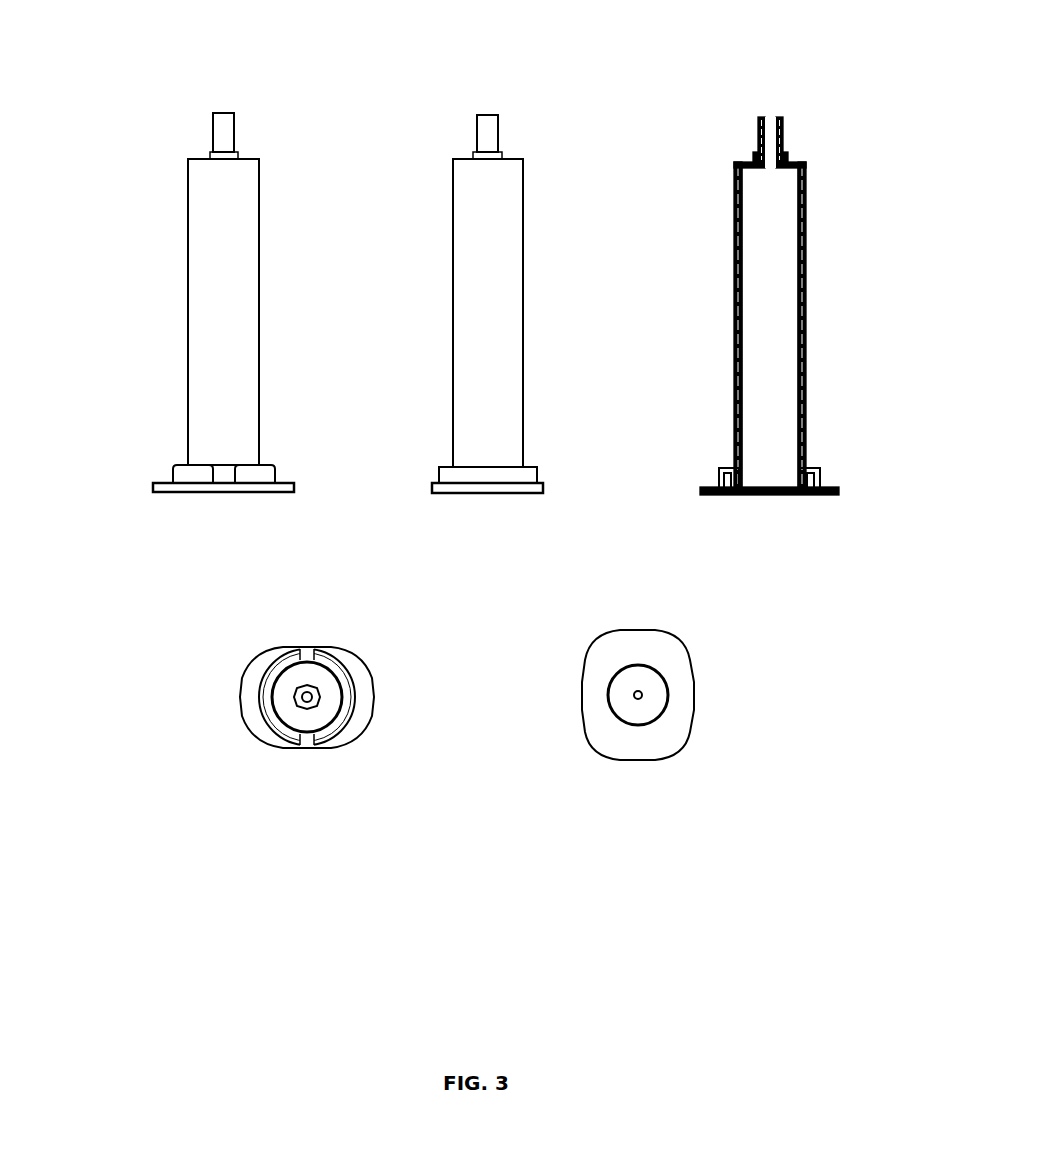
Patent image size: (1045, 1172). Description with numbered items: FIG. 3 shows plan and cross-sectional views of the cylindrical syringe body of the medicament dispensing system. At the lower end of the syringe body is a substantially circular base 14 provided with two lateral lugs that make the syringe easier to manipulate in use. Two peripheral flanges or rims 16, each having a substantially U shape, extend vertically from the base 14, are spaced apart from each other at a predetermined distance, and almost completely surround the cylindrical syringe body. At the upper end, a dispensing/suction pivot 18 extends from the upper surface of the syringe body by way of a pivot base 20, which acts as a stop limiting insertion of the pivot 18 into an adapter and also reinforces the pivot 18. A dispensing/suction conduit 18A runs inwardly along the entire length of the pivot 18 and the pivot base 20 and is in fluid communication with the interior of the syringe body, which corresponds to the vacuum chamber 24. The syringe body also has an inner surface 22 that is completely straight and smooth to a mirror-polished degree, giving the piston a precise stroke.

The base 14 is at (150, 487).
The peripheral flanges or rims 16 is at (200, 485).
The dispensing/suction pivot 18 is at (239, 111).
The dispensing/suction conduit 18A is at (757, 143).
The pivot base 20 is at (203, 153).
The inner surface 22 is at (796, 263).
The vacuum chamber 24 is at (772, 311).